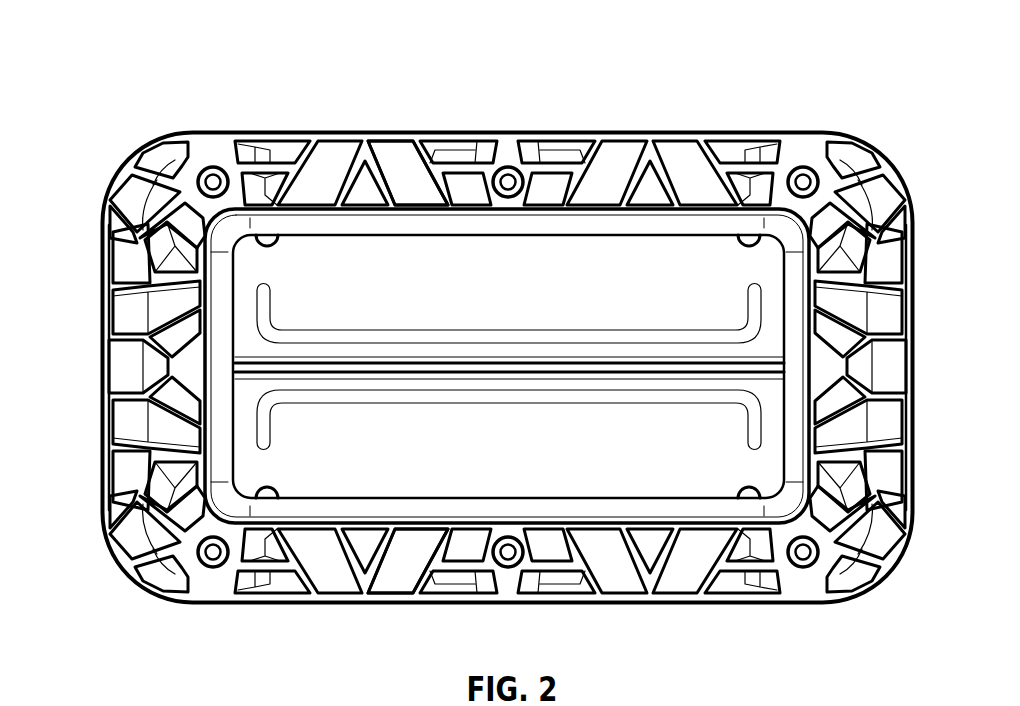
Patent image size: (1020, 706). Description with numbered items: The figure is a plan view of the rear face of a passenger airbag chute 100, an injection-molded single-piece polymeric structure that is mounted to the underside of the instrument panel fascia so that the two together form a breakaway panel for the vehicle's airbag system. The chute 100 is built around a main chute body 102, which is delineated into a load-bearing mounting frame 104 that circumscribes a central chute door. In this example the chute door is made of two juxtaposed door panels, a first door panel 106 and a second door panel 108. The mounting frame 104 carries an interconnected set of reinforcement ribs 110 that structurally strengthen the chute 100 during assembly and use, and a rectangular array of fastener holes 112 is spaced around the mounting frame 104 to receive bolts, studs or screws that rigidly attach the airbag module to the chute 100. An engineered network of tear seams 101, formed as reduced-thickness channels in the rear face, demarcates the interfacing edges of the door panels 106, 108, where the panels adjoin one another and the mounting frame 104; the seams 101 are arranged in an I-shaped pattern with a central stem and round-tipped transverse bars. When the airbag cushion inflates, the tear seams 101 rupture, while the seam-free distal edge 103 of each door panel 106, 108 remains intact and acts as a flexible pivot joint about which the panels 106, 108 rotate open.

The PAB chute 100 is at (190, 40).
The tear seams 101 is at (235, 363).
The main chute body 102 is at (469, 354).
The distal edge 103 is at (418, 233).
The mounting frame 104 is at (102, 298).
The first door panel 106 is at (535, 297).
The second door panel 108 is at (535, 452).
The reinforcement ribs 110 is at (348, 162).
The fastener holes 112 is at (211, 165).